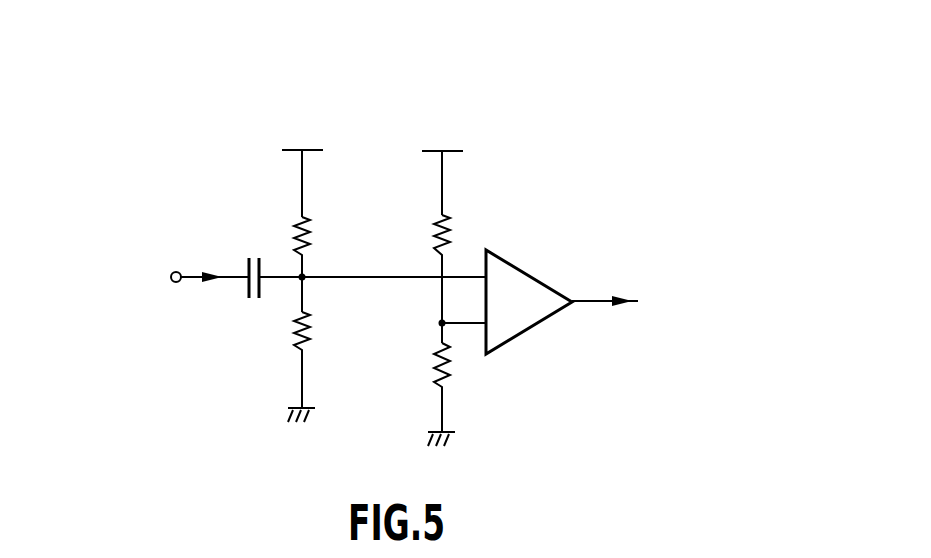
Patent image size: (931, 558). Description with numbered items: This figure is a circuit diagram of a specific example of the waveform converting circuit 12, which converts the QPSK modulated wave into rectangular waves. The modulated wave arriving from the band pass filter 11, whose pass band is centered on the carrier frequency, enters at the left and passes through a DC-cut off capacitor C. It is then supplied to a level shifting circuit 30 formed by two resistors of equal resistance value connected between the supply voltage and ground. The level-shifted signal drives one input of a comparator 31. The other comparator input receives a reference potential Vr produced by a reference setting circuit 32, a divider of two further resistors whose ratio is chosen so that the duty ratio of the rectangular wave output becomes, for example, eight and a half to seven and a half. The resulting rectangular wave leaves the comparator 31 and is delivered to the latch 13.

The band pass filter 11 is at (109, 272).
The waveform converting circuit 12 is at (366, 118).
The latch 13 is at (688, 302).
The level shifting circuit 30 is at (266, 321).
The comparator 31 is at (521, 270).
The reference setting circuit 32 is at (418, 339).